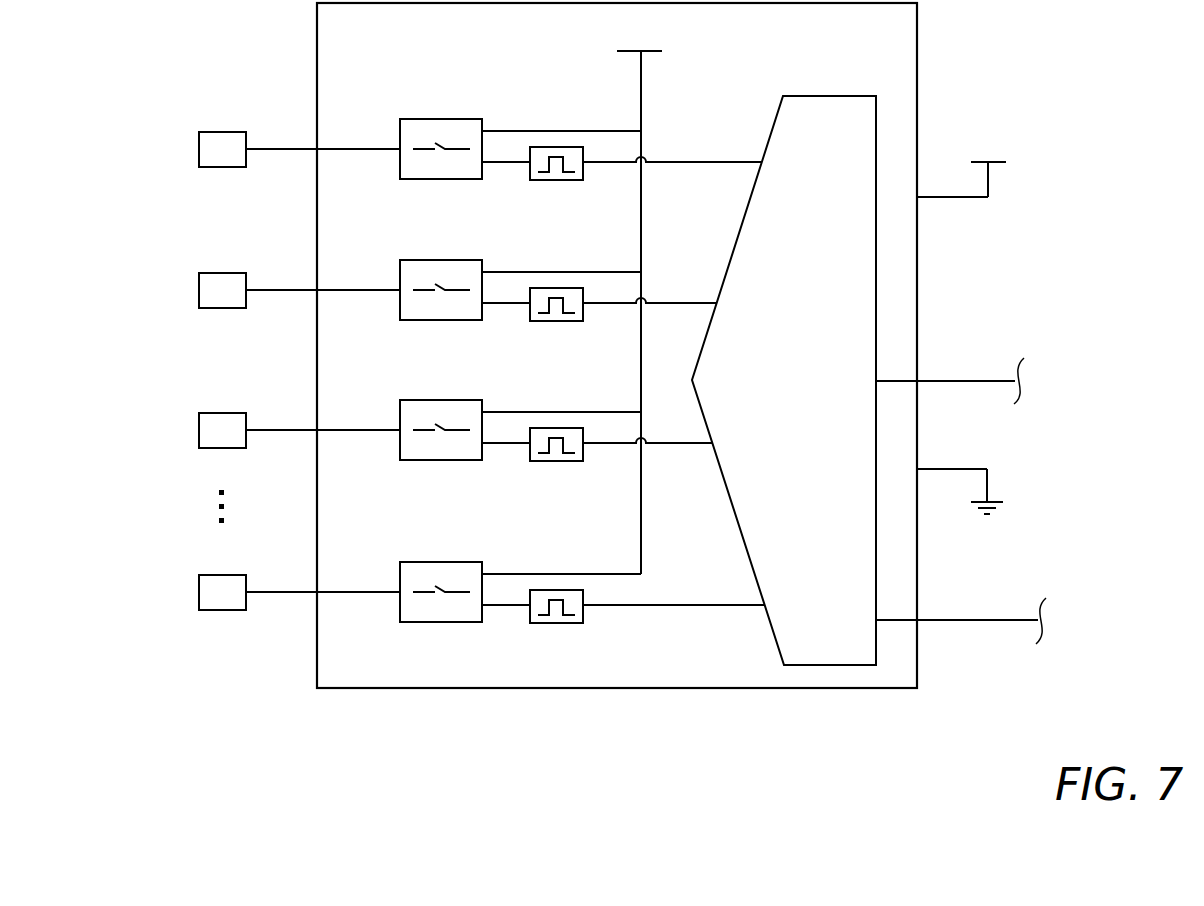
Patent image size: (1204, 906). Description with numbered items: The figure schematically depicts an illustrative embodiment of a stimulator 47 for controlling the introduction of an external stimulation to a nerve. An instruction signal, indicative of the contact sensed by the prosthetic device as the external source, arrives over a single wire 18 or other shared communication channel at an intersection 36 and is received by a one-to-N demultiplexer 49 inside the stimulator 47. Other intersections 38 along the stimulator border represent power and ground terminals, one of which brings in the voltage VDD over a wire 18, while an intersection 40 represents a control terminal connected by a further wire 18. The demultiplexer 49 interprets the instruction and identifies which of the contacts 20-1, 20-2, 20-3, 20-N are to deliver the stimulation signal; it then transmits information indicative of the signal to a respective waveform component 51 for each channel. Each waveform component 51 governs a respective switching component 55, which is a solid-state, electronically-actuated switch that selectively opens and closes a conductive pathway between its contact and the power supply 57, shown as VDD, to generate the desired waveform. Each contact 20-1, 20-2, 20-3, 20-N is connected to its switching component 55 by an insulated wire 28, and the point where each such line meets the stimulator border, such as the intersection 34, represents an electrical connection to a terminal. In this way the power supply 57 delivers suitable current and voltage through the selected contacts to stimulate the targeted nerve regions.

The contact 20-1 is at (215, 150).
The contact 20-2 is at (222, 283).
The contact 20-3 is at (215, 428).
The contact 20-N is at (210, 582).
The insulated wire 28 is at (283, 148).
The intersection 34 is at (312, 591).
The switching component 55 is at (462, 119).
The waveform component 51 is at (580, 180).
The power supply 57 is at (648, 53).
The demultiplexer 49 is at (837, 203).
The stimulator 47 is at (826, 702).
The intersection 36 is at (922, 383).
The intersection 40 is at (1003, 618).
The intersections 38 is at (918, 196).
The wire 18 is at (950, 198).